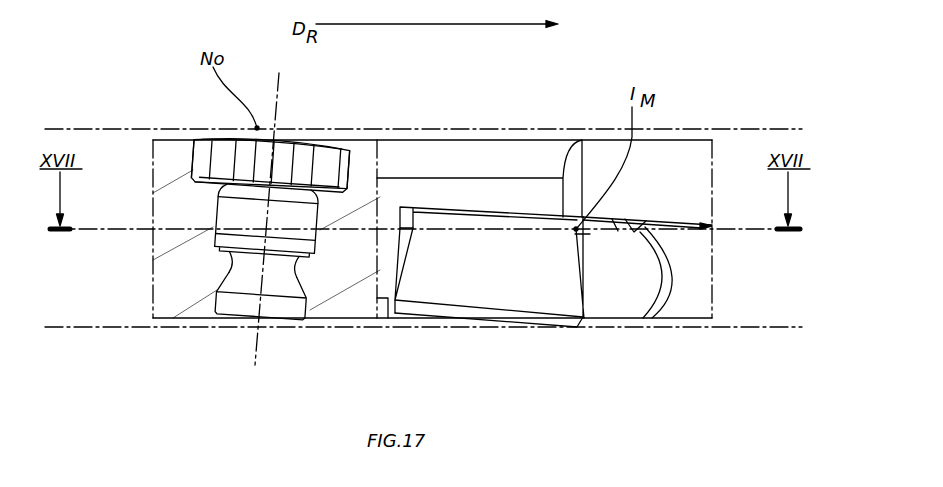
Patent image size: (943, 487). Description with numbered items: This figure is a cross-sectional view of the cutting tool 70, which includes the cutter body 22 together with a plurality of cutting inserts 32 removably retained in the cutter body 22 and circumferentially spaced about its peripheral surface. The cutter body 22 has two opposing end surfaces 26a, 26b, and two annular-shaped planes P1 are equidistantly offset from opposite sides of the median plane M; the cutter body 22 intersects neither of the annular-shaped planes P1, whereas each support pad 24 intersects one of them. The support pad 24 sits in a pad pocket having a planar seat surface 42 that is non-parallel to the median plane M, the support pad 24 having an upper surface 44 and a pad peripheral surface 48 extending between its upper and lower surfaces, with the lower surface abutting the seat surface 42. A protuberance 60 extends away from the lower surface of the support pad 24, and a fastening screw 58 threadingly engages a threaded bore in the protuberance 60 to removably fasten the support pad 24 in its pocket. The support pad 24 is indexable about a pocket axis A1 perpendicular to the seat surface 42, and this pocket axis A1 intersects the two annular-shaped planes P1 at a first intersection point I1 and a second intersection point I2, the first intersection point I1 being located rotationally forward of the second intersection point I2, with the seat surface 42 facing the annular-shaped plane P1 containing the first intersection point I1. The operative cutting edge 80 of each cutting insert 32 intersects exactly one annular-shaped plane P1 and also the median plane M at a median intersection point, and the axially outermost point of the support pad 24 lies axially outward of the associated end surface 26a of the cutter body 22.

The cutter body 22 is at (175, 289).
The support pad 24 is at (305, 150).
The end surface 26a is at (660, 130).
The end surface 26b is at (652, 333).
The cutting insert 32 is at (475, 292).
The seat surface 42 is at (208, 135).
The upper surface 44 is at (238, 134).
The pad peripheral surface 48 is at (340, 166).
The fastening screw 58 is at (238, 298).
The protuberance 60 is at (230, 212).
The cutting tool 70 is at (484, 103).
The operative cutting edge 80 is at (581, 272).
The pocket axis A1 is at (265, 220).
The first intersection point I1 is at (275, 128).
The second intersection point I2 is at (258, 328).
The annular-shaped plane P1 is at (436, 229).
The median plane M is at (427, 231).